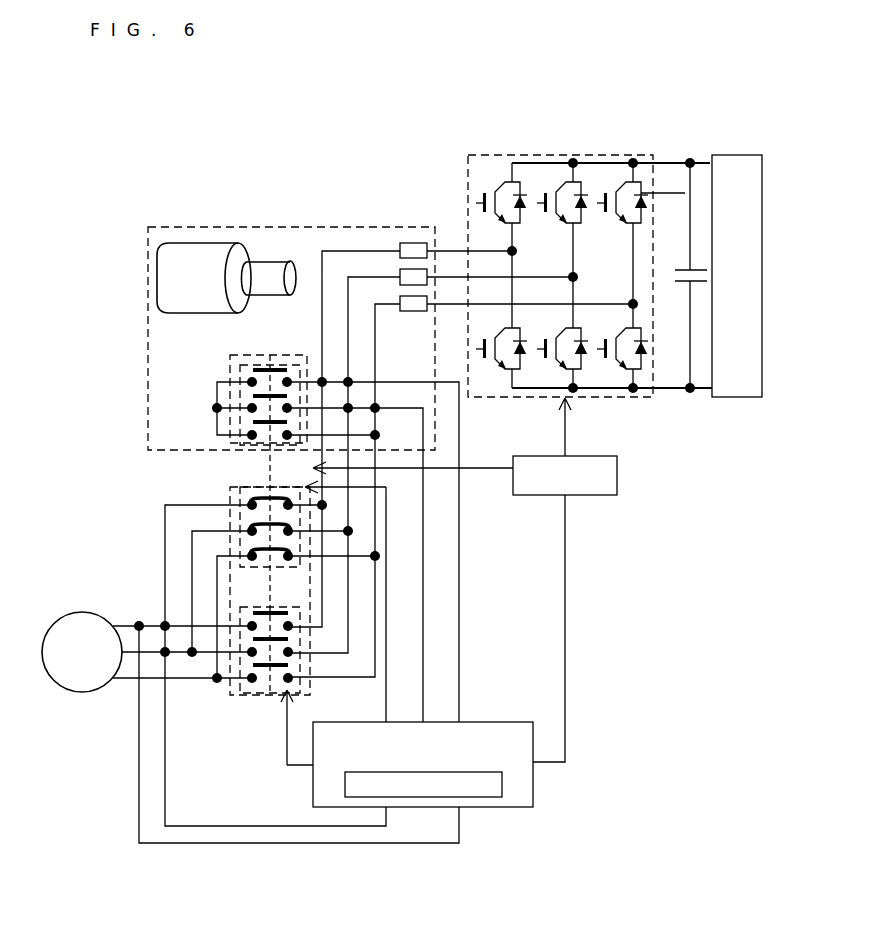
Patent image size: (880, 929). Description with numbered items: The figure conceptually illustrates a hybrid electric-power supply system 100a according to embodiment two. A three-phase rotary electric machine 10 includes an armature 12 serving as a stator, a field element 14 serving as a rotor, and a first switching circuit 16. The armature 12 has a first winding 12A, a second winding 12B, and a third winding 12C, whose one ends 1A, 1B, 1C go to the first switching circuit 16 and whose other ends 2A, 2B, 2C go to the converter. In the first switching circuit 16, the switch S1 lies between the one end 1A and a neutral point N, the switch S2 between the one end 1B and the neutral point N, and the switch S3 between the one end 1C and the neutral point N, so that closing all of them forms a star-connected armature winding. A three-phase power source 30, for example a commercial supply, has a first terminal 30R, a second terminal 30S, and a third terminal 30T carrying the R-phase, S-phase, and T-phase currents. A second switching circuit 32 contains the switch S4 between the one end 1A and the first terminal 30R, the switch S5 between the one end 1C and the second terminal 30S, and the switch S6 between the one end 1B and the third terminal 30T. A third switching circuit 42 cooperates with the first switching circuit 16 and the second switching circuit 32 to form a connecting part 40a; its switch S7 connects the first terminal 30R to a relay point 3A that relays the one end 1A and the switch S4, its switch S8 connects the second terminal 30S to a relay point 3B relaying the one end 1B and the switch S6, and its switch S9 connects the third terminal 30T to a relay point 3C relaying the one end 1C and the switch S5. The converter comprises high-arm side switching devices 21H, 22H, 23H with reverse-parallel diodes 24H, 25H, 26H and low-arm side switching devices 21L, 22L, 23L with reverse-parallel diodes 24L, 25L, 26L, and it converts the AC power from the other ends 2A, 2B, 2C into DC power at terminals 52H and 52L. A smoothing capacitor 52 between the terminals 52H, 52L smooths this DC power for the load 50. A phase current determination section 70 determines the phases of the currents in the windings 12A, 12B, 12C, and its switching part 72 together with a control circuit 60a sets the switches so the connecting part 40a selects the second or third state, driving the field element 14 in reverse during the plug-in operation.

The hybrid electric-power supply system 100a is at (154, 204).
The three-phase rotary electric machine 10 is at (255, 226).
The field element 14 is at (270, 266).
The first switching circuit 16 is at (283, 362).
The armature 12 is at (430, 179).
The first winding 12A is at (400, 246).
The second winding 12B is at (400, 277).
The third winding 12C is at (400, 302).
The connecting part 40a is at (262, 355).
The switch S1 is at (255, 369).
The switch S2 is at (255, 396).
The neutral point N is at (217, 408).
The switch S3 is at (255, 423).
The one end of the first winding 1A is at (330, 380).
The one end of the second winding 1B is at (352, 406).
The one end of the third winding 1C is at (378, 435).
The third switching circuit 42 is at (250, 481).
The switch S7 is at (250, 500).
The switch S8 is at (250, 525).
The switch S9 is at (250, 551).
The relay point 3A is at (330, 505).
The relay point 3B is at (355, 531).
The relay point 3C is at (382, 556).
The second switching circuit 32 is at (268, 697).
The switch S4 is at (290, 613).
The switch S5 is at (290, 639).
The switch S6 is at (290, 665).
The three-phase power source 30 is at (82, 692).
The first terminal 30R is at (252, 652).
The second terminal 30S is at (252, 626).
The third terminal 30T is at (252, 690).
The high-arm side switching device 21H is at (483, 192).
The high-arm side switching device 22H is at (544, 192).
The high-arm side switching device 23H is at (604, 192).
The diode 24H is at (517, 197).
The diode 25H is at (578, 197).
The diode 26H is at (638, 197).
The low-arm side switching device 21L is at (483, 359).
The low-arm side switching device 22L is at (544, 359).
The low-arm side switching device 23L is at (604, 359).
The diode 24L is at (517, 354).
The diode 25L is at (582, 347).
The diode 26L is at (638, 354).
The other end of the first winding 2A is at (514, 251).
The other end of the second winding 2B is at (575, 277).
The other end of the third winding 2C is at (631, 303).
The smoothing capacitor 52 is at (686, 268).
The terminal 52H is at (690, 160).
The terminal 52L is at (690, 393).
The load 50 is at (746, 155).
The control circuit 60a is at (605, 499).
The phase current determination section 70 is at (517, 720).
The switching part 72 is at (502, 785).